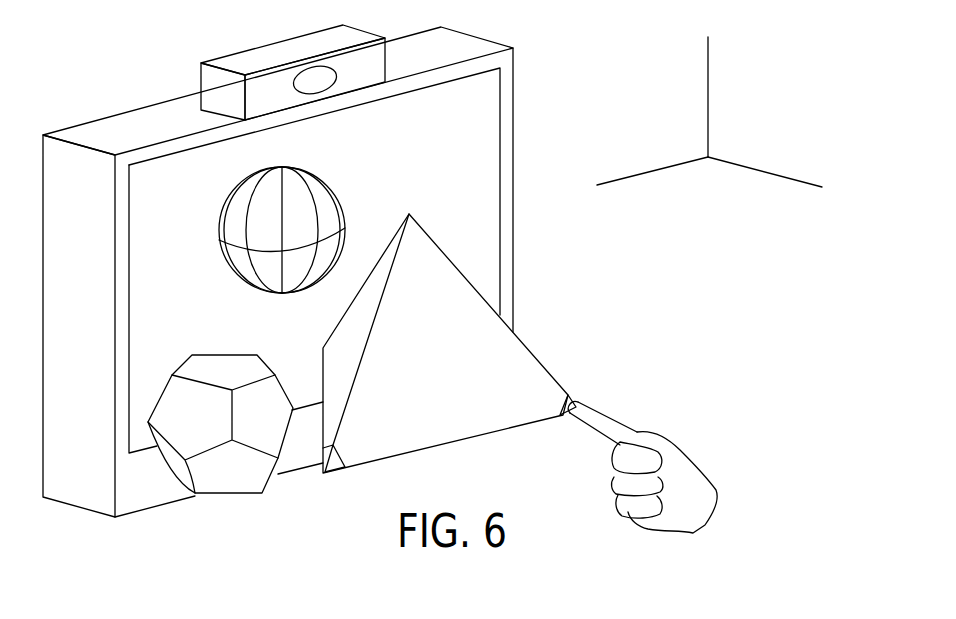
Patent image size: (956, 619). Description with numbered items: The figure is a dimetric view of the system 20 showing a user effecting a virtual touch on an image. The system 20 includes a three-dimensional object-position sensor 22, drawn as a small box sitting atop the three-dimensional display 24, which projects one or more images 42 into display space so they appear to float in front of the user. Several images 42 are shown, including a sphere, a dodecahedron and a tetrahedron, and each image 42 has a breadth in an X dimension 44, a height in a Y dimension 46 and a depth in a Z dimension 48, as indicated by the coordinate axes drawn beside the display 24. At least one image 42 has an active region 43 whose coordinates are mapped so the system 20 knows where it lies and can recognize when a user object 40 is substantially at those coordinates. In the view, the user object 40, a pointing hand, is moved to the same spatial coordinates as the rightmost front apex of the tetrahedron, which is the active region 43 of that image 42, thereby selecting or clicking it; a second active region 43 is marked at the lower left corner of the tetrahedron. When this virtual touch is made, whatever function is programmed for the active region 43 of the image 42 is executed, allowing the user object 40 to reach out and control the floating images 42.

The system 20 is at (533, 505).
The three-dimensional object-position sensor 22 is at (273, 53).
The three-dimensional display 24 is at (405, 163).
The user object 40 is at (682, 468).
The image 42 is at (297, 235).
The active region 43 is at (333, 470).
The X dimension 44 is at (645, 172).
The Y dimension 46 is at (710, 117).
The Z dimension 48 is at (772, 172).